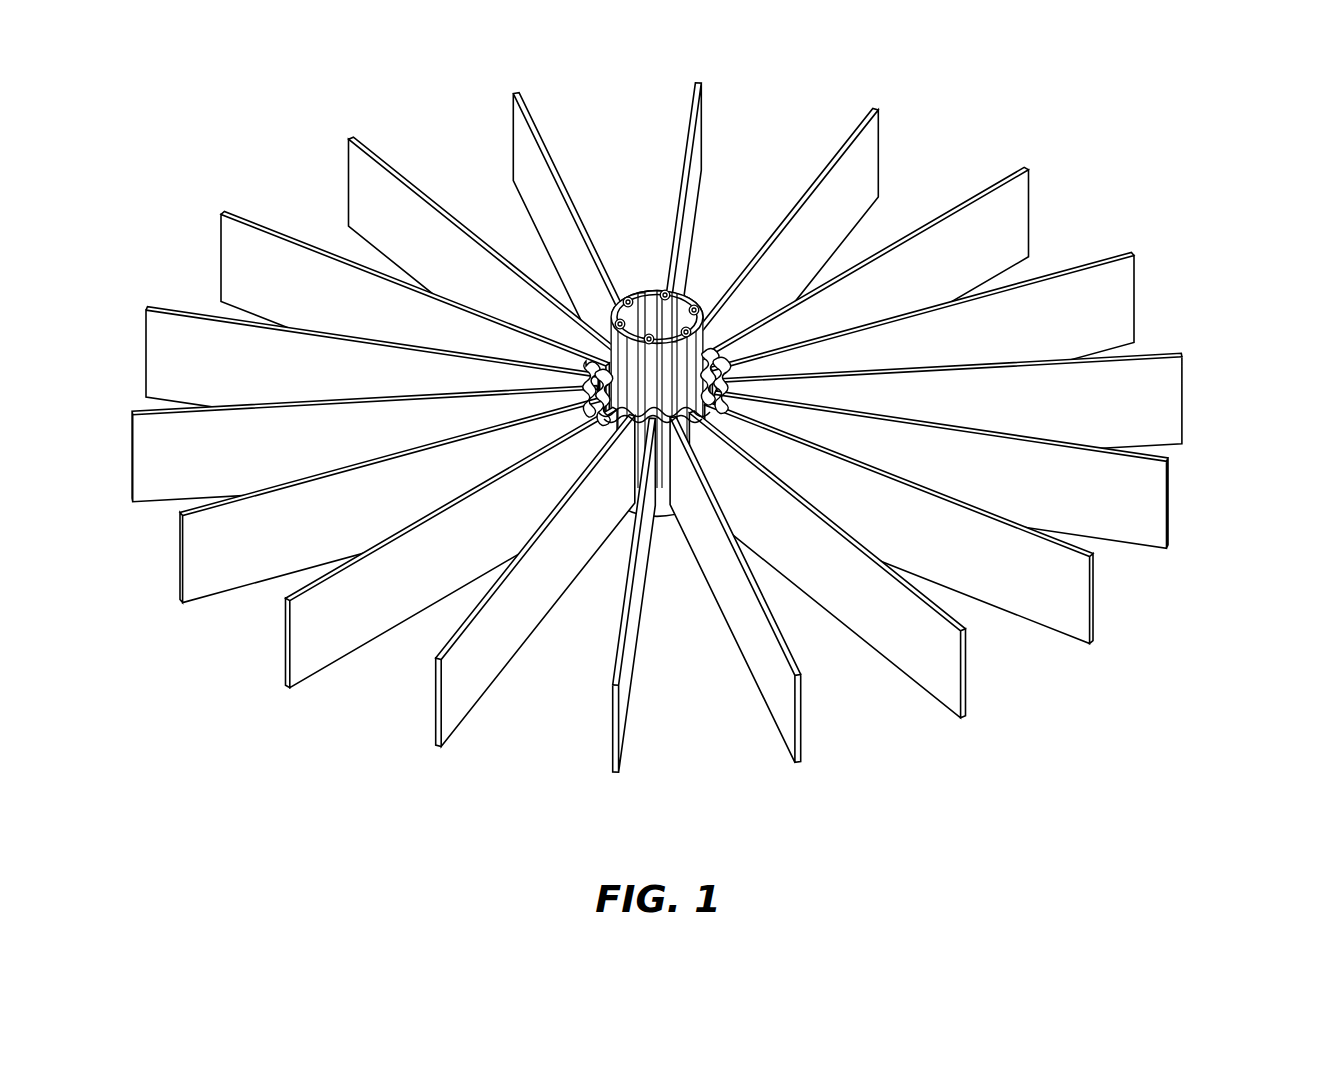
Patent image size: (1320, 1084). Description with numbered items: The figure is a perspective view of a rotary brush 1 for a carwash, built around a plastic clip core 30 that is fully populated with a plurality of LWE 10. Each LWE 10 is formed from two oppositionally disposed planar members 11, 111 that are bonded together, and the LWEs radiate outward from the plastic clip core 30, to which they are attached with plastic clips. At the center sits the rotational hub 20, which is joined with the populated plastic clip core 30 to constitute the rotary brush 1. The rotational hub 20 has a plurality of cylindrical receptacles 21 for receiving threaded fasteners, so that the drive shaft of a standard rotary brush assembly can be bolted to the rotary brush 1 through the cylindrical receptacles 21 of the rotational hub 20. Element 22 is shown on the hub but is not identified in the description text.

The rotary brush 1 is at (268, 776).
The LWE 10 is at (712, 447).
The planar member 11 is at (456, 677).
The planar member 111 is at (1162, 406).
The rotational hub 20 is at (677, 342).
The cylindrical receptacle 21 is at (628, 298).
The slot 22 is at (662, 290).
The plastic clip core 30 is at (797, 302).